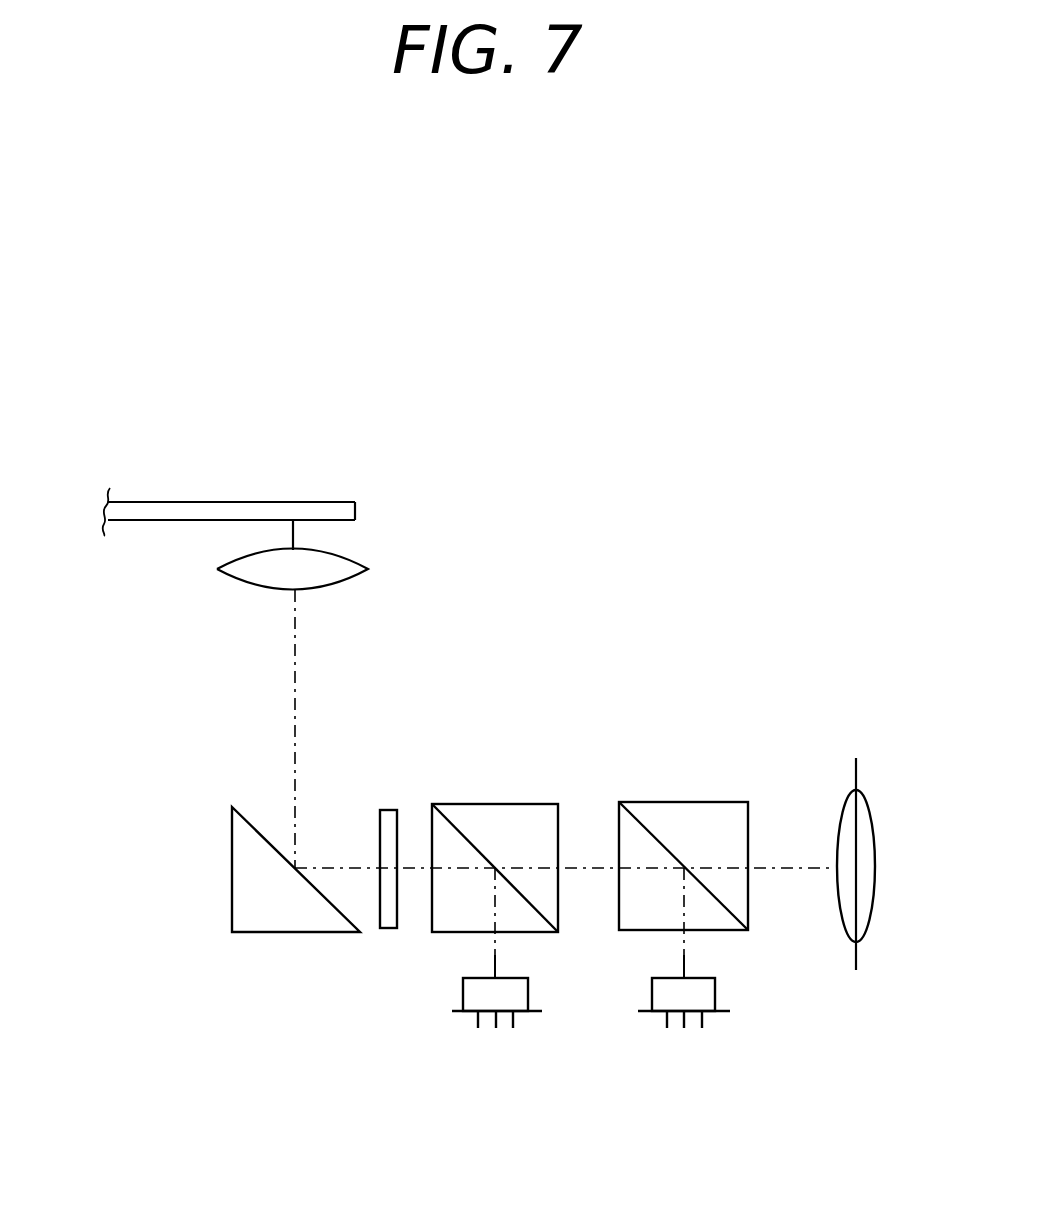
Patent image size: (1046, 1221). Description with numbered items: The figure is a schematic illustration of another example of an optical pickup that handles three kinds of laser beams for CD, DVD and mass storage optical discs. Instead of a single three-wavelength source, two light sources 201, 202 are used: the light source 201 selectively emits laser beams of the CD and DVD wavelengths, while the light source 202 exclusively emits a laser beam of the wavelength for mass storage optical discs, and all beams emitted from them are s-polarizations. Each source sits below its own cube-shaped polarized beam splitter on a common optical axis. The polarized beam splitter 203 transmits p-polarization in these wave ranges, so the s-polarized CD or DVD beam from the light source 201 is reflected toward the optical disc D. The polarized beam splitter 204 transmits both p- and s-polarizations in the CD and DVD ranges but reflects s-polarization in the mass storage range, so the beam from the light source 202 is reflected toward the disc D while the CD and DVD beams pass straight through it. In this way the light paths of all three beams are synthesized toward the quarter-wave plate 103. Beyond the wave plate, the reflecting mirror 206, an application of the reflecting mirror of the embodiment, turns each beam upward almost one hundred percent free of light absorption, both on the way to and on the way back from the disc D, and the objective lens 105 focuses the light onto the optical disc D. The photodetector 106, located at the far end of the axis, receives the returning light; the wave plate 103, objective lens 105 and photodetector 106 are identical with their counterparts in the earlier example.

The optical disc D is at (355, 511).
The objective lens 105 is at (230, 578).
The reflecting mirror 206 is at (232, 870).
The λ/4 wave plate 103 is at (390, 810).
The polarized beam splitter 204 is at (512, 804).
The polarized beam splitter 203 is at (680, 802).
The photodetector 106 is at (868, 815).
The light source 201 is at (715, 990).
The light source 202 is at (463, 998).